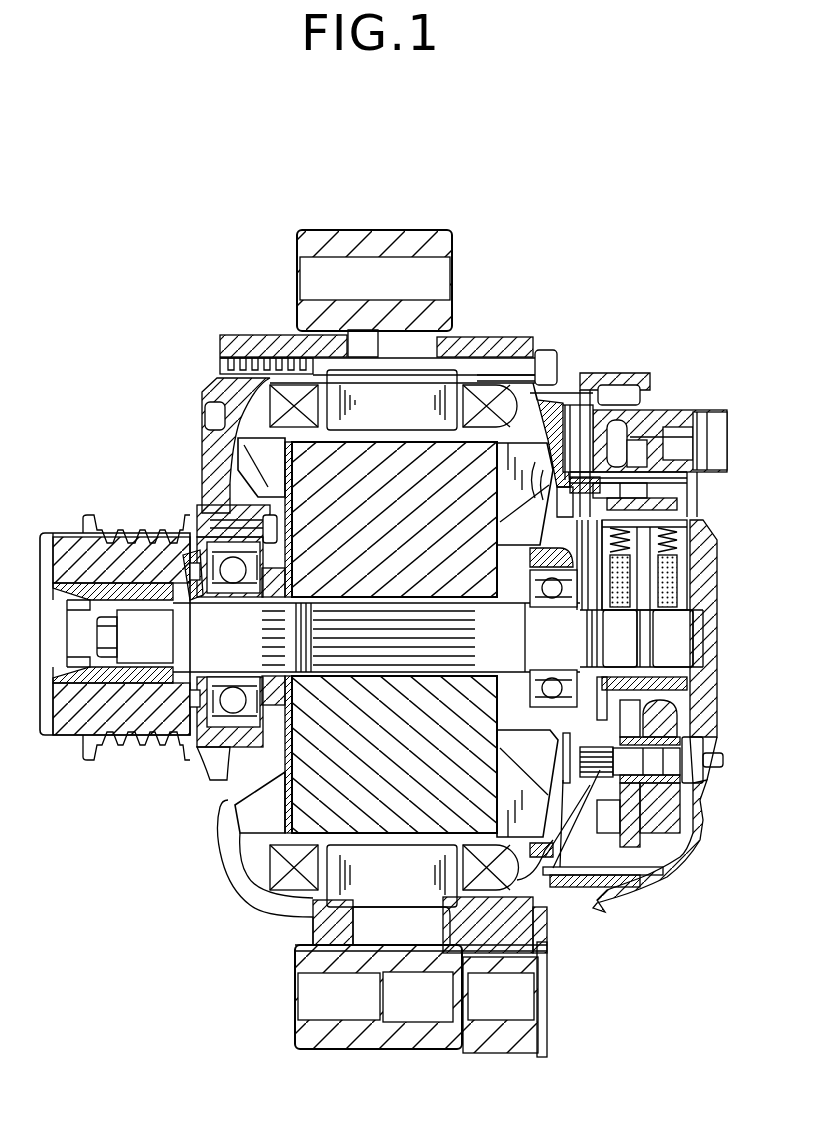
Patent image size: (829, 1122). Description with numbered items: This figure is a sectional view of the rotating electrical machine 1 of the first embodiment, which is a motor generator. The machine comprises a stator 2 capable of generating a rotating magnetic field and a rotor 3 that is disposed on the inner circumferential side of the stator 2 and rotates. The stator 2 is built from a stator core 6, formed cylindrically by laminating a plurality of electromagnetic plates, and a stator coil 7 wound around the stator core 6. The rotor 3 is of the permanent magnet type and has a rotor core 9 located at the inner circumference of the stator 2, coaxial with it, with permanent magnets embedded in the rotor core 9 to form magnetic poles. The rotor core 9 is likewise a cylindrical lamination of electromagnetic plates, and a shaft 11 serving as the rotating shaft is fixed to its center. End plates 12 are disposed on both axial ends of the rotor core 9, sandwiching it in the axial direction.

The rotating electrical machine 1 is at (117, 146).
The stator 2 is at (235, 213).
The rotor 3 is at (286, 799).
The stator core 6 is at (387, 383).
The stator coil 7 is at (295, 392).
The rotor core 9 is at (303, 530).
The shaft 11 is at (195, 652).
The end plates 12 is at (548, 862).